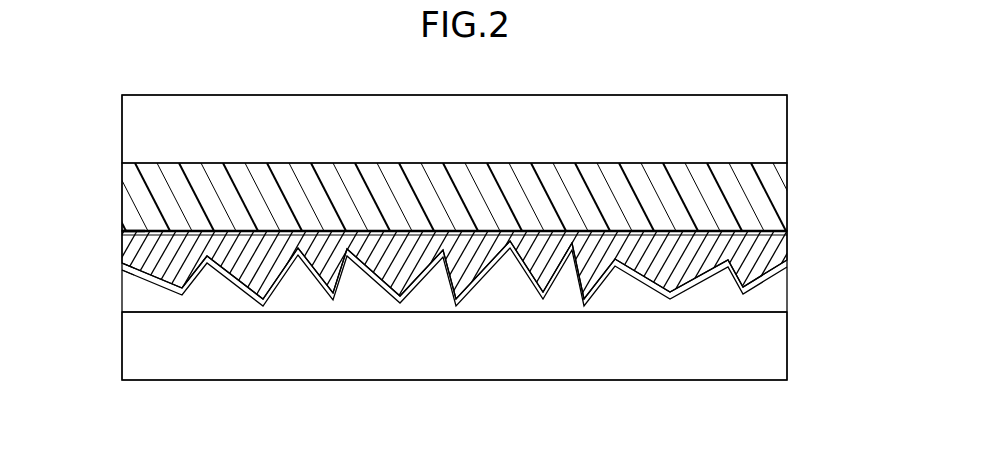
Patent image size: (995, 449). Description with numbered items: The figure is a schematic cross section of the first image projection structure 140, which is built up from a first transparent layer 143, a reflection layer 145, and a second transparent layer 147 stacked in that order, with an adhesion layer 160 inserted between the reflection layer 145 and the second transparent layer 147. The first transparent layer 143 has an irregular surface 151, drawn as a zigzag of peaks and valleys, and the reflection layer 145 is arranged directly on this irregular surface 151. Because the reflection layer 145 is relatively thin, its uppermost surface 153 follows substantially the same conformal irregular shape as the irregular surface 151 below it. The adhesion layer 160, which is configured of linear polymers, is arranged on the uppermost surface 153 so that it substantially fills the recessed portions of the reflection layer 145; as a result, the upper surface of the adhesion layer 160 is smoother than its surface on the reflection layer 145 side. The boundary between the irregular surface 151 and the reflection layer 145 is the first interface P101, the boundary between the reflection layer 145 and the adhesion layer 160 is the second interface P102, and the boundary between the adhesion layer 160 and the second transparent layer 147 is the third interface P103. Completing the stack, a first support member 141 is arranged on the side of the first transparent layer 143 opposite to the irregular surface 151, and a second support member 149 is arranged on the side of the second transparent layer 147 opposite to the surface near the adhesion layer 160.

The first image projection structure 140 is at (791, 80).
The second support member 149 is at (777, 120).
The second transparent layer 147 is at (780, 194).
The adhesion layer 160 is at (794, 230).
The uppermost surface of the reflection layer 153 is at (778, 256).
The reflection layer 145 is at (755, 280).
The irregular surface 151 is at (762, 289).
The first transparent layer 143 is at (777, 300).
The first support member 141 is at (777, 344).
The first interface P101 is at (128, 273).
The second interface P102 is at (128, 254).
The third interface P103 is at (131, 226).